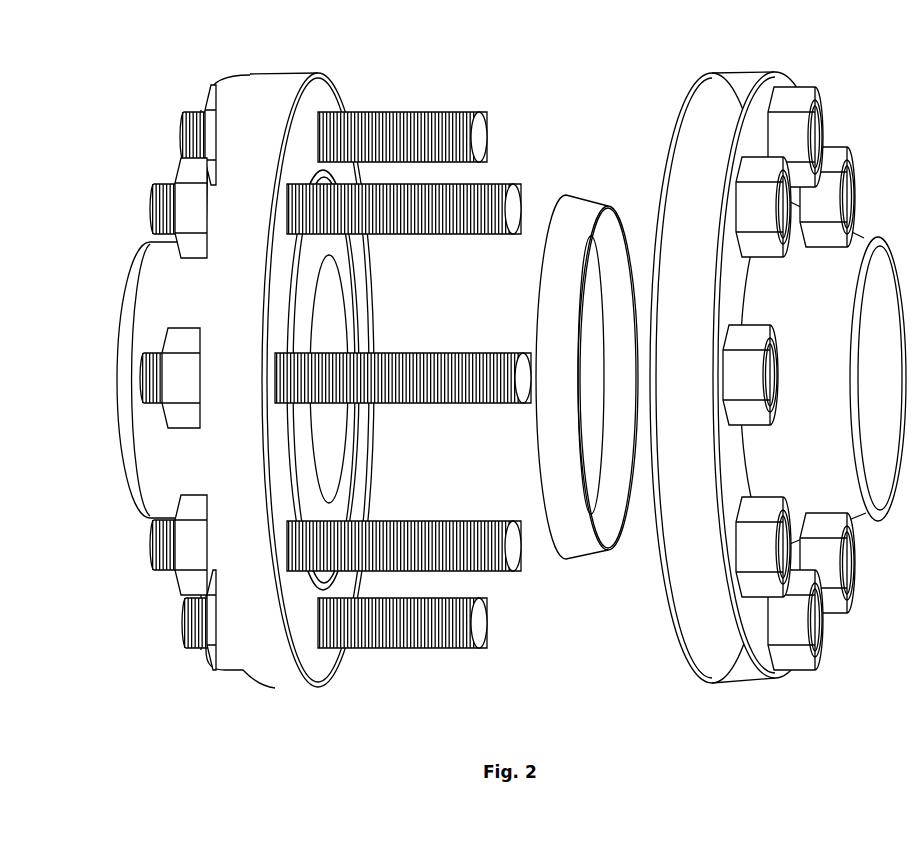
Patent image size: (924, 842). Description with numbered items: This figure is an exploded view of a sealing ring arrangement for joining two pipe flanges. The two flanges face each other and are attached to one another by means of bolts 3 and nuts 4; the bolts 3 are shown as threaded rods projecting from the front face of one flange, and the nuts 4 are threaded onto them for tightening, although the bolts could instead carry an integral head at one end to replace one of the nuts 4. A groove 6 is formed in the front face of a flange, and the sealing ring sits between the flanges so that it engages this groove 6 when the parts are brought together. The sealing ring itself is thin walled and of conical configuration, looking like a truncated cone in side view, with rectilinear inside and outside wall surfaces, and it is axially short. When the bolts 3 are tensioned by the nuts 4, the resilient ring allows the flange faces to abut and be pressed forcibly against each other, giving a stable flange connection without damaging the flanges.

The bolt 3 is at (411, 111).
The nut 4 is at (790, 132).
The groove 6 is at (285, 318).